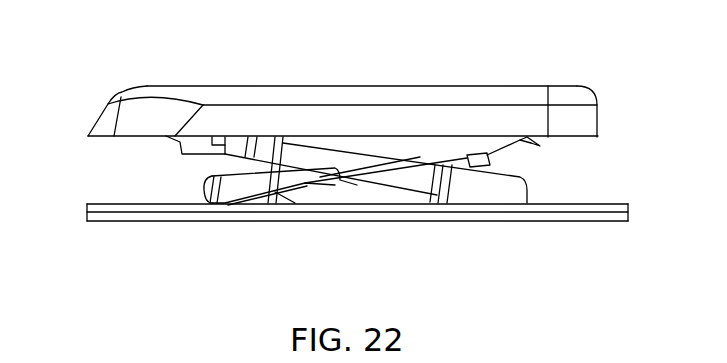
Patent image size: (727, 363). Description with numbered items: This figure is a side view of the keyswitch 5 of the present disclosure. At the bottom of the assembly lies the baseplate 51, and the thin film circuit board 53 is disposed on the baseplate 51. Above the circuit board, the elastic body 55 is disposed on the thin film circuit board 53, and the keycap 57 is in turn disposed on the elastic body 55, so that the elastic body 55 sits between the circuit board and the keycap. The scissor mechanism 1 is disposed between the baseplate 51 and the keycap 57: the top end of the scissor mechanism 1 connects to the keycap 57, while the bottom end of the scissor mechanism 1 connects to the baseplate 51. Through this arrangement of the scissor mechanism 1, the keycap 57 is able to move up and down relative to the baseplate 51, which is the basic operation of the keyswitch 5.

The keyswitch 5 is at (638, 42).
The keycap 57 is at (145, 118).
The scissor mechanism 1 is at (176, 175).
The elastic body 55 is at (337, 195).
The thin film circuit board 53 is at (100, 206).
The baseplate 51 is at (98, 219).